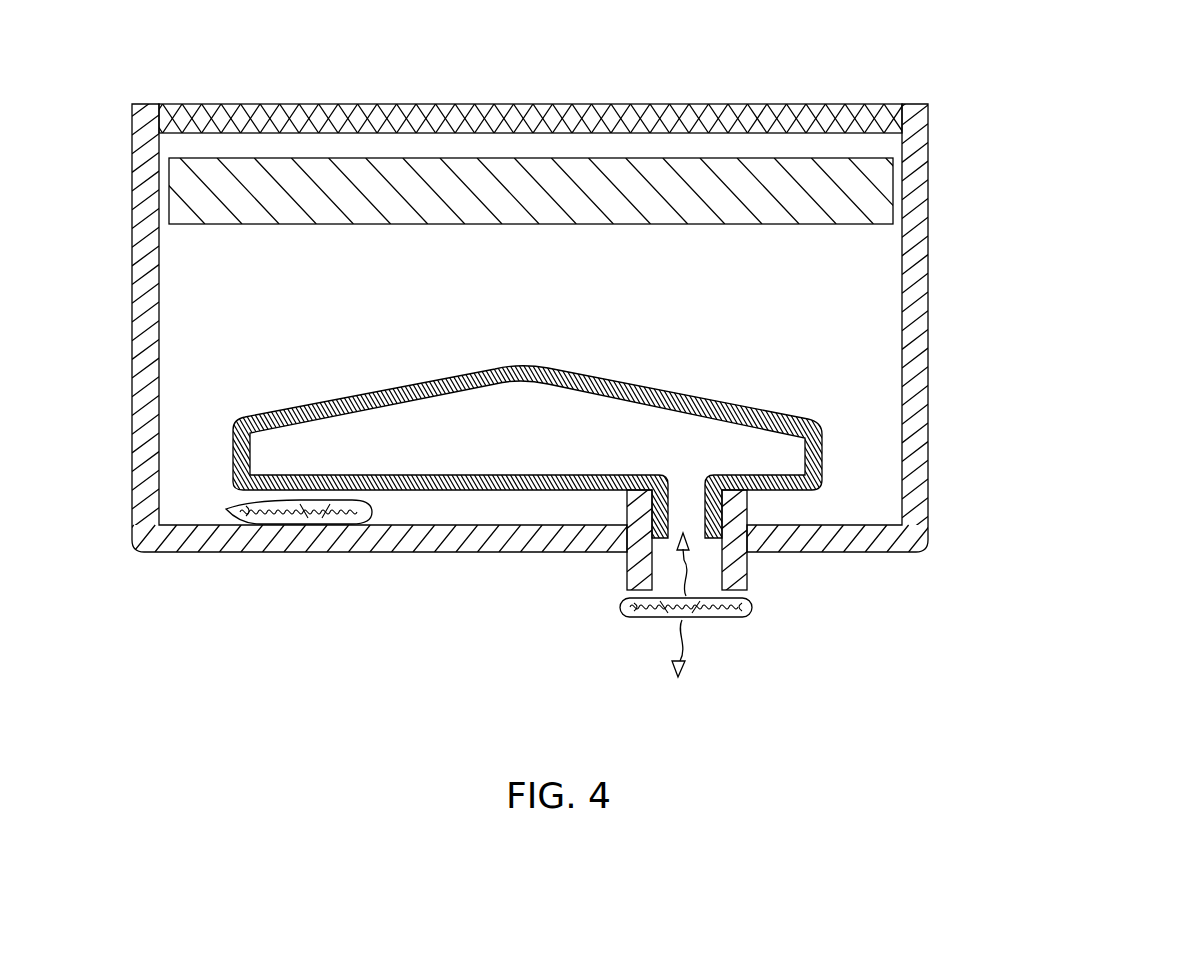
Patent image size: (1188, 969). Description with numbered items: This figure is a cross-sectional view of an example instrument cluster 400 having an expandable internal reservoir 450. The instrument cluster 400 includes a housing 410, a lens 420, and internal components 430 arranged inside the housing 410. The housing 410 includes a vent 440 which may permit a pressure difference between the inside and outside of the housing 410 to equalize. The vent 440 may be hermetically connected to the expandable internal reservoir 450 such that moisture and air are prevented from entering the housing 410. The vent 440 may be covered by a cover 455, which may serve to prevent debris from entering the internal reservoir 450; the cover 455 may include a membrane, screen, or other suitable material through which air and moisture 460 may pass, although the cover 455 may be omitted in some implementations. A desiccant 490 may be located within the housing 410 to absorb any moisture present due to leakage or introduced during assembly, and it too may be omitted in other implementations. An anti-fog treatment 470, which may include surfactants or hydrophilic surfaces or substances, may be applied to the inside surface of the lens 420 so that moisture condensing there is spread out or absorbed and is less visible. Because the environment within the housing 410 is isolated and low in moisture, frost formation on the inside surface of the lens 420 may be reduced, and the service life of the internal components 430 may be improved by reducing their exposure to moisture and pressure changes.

The instrument cluster 400 is at (573, 355).
The housing 410 is at (929, 165).
The lens 420 is at (802, 105).
The internal components 430 is at (262, 158).
The vent 440 is at (748, 572).
The expandable internal reservoir 450 is at (243, 421).
The cover 455 is at (732, 618).
The air and moisture 460 is at (684, 620).
The anti-fog treatment 470 is at (568, 136).
The desiccant 490 is at (232, 506).